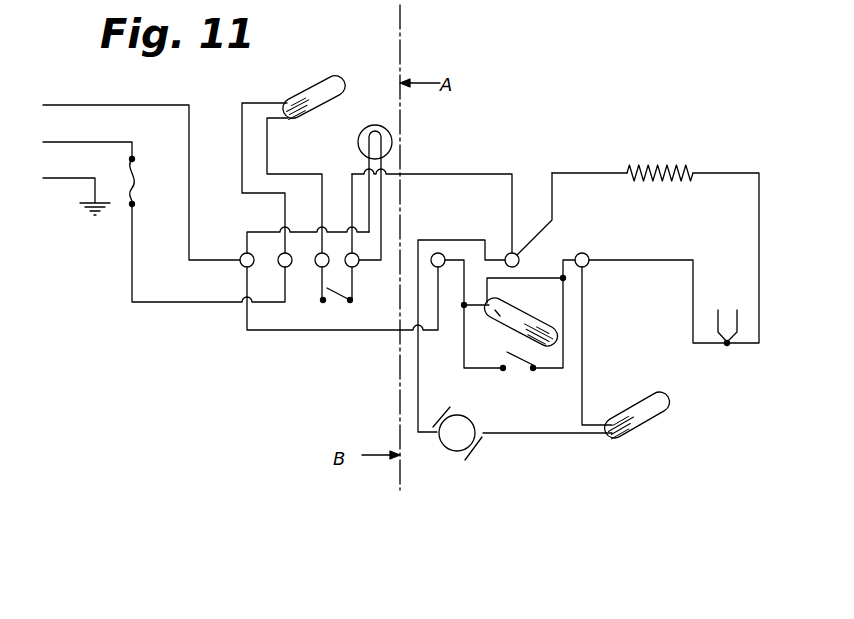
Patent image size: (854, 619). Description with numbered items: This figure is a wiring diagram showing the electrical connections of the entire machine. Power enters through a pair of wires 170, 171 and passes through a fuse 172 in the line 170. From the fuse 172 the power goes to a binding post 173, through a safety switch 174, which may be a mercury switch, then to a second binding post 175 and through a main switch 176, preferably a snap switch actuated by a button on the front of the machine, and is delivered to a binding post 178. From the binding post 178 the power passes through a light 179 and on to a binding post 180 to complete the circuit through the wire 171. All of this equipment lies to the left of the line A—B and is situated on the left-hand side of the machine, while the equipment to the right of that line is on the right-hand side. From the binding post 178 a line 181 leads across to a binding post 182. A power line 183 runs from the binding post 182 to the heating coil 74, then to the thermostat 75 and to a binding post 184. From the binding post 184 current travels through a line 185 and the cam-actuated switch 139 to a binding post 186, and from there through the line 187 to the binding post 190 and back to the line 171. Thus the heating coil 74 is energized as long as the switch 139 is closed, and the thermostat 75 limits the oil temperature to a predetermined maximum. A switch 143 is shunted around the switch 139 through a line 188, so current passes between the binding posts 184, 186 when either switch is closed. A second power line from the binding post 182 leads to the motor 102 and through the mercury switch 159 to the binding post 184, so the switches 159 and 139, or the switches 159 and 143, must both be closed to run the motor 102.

The wire 171 is at (135, 105).
The wire 170 is at (96, 141).
The fuse 172 is at (135, 181).
The safety switch 174 is at (310, 86).
The light 179 is at (358, 145).
The binding post 180 is at (242, 263).
The binding post 173 is at (280, 257).
The second binding post 175 is at (314, 258).
The binding post 178 is at (357, 268).
The main switch 176 is at (330, 304).
The line 187 is at (302, 333).
The line 181 is at (487, 151).
The binding post 186 is at (442, 254).
The binding post 182 is at (516, 267).
The line 185 is at (505, 283).
The switch 139 is at (506, 310).
The switch 143 is at (533, 374).
The line 188 is at (462, 338).
The binding post 190 is at (420, 402).
The motor 102 is at (452, 444).
The power line 183 is at (593, 160).
The heating coil 74 is at (670, 166).
The binding post 184 is at (587, 253).
The thermostat 75 is at (723, 325).
The mercury switch 159 is at (687, 382).